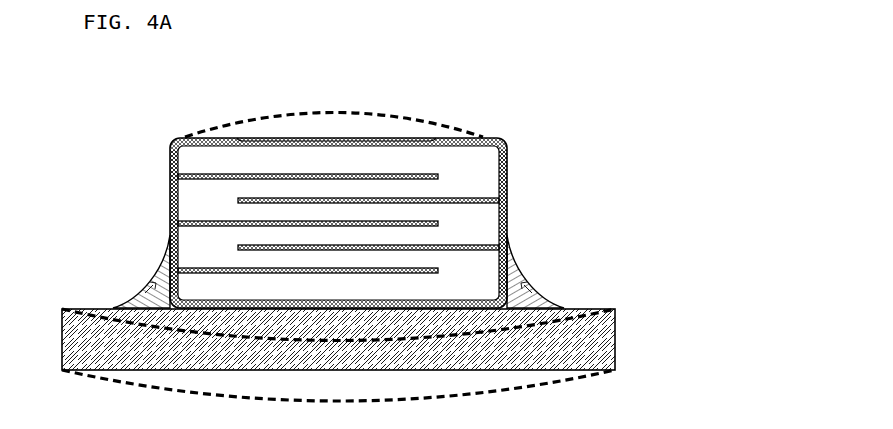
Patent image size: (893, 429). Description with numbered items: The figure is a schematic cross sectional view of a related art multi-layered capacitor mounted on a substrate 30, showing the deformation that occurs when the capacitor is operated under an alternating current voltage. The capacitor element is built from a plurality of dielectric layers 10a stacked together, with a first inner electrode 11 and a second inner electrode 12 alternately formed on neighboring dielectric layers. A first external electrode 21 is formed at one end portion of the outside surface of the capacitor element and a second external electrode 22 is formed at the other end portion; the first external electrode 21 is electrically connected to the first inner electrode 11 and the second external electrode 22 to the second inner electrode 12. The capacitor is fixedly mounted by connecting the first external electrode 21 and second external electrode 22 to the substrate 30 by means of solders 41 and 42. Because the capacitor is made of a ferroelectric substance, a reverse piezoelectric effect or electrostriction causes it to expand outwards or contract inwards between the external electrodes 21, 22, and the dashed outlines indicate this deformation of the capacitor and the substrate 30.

The dielectric layers 10a is at (362, 150).
The first inner electrode 11 is at (279, 177).
The second inner electrode 12 is at (465, 197).
The first external electrode 21 is at (168, 162).
The second external electrode 22 is at (510, 157).
The substrate 30 is at (605, 335).
The solder 41 is at (152, 277).
The solder 42 is at (525, 277).